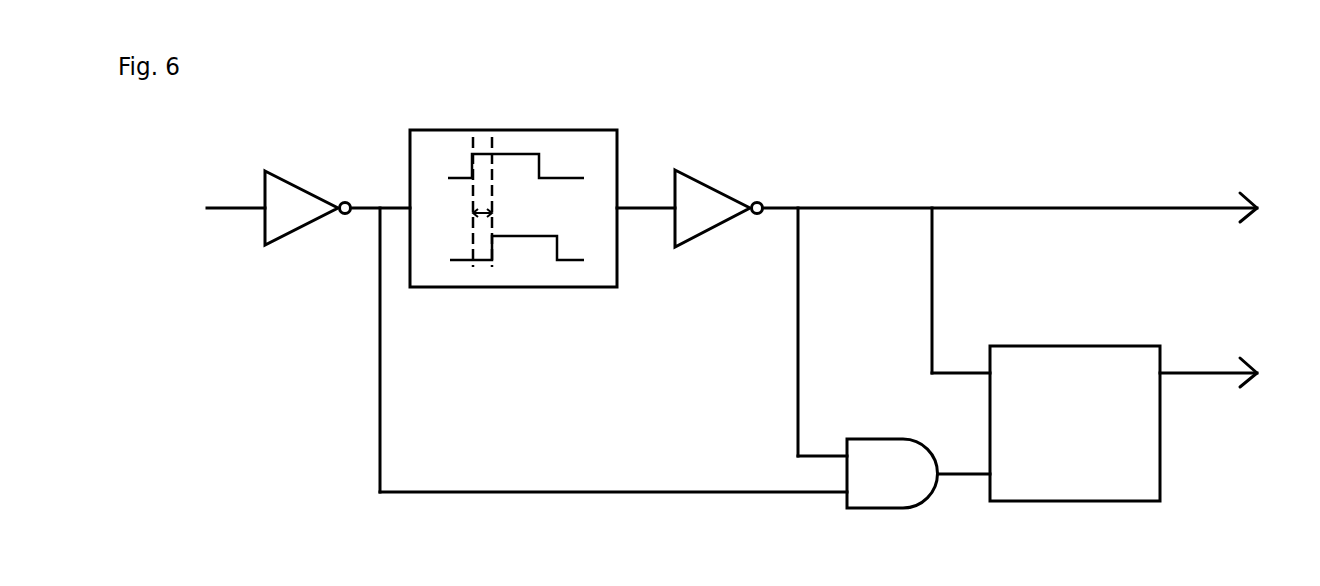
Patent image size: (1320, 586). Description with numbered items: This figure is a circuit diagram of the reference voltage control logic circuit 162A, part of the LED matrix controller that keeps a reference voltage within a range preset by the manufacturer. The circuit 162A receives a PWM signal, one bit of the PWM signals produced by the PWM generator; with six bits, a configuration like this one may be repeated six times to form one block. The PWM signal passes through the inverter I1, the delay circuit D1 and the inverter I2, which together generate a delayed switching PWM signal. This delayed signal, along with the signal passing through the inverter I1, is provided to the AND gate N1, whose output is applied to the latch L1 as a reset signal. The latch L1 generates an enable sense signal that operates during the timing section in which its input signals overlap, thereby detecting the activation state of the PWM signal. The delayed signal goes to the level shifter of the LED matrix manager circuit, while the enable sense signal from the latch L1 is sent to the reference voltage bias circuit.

The reference voltage control logic circuit 162A is at (848, 93).
The inverter I1 is at (308, 208).
The inverter I2 is at (719, 208).
The delay circuit D1 is at (580, 128).
The AND gate N1 is at (892, 473).
The latch L1 is at (1075, 423).